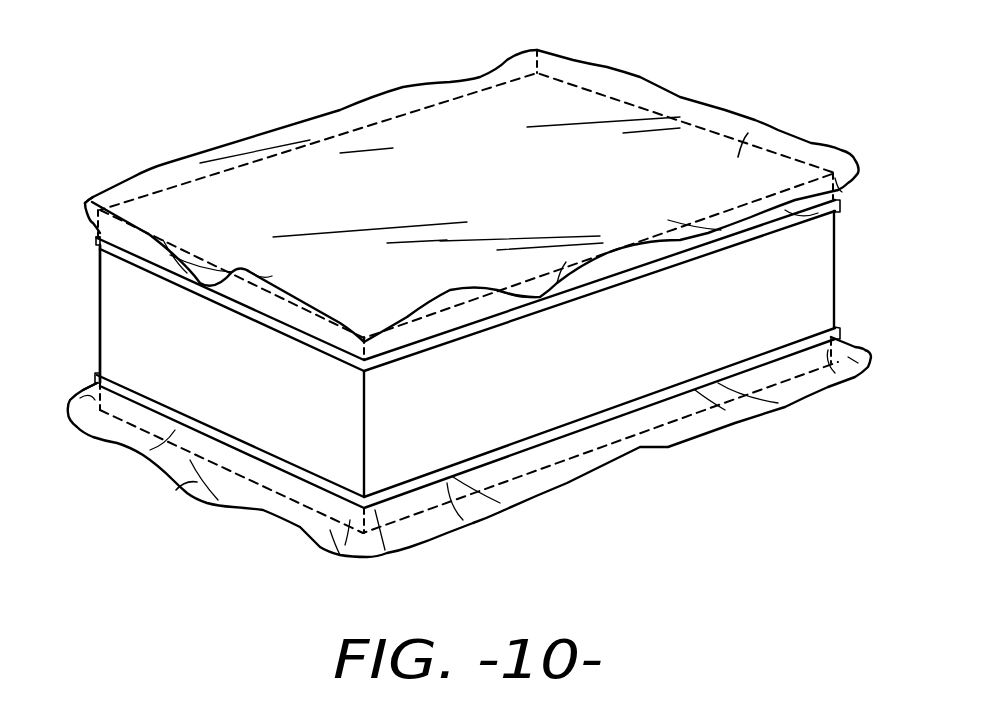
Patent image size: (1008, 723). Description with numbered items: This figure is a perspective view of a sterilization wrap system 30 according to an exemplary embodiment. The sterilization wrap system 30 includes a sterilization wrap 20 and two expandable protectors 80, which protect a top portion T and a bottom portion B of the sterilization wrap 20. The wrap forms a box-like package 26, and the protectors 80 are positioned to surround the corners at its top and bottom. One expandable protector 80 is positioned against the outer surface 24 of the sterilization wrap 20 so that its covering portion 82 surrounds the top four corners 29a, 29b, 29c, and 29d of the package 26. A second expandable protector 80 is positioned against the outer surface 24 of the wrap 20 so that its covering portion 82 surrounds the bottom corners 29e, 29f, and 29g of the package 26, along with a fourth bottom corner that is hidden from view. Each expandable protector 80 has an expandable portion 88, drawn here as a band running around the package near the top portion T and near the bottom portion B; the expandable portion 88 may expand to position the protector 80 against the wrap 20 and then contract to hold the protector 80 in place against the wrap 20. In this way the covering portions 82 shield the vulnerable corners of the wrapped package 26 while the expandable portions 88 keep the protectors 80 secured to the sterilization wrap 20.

The sterilization wrap 20 is at (812, 280).
The outer surface 24 is at (305, 450).
The package 26 is at (115, 313).
The sterilization wrap system 30 is at (182, 89).
The expandable protector 80 is at (637, 92).
The covering portion 82 is at (738, 157).
The expandable portion 88 is at (803, 216).
The corner 29a is at (80, 203).
The corner 29b is at (365, 340).
The corner 29c is at (833, 173).
The corner 29d is at (537, 50).
The corner 29e is at (72, 417).
The corner 29f is at (345, 545).
The corner 29g is at (858, 370).
The top portion T is at (68, 232).
The bottom portion B is at (52, 420).